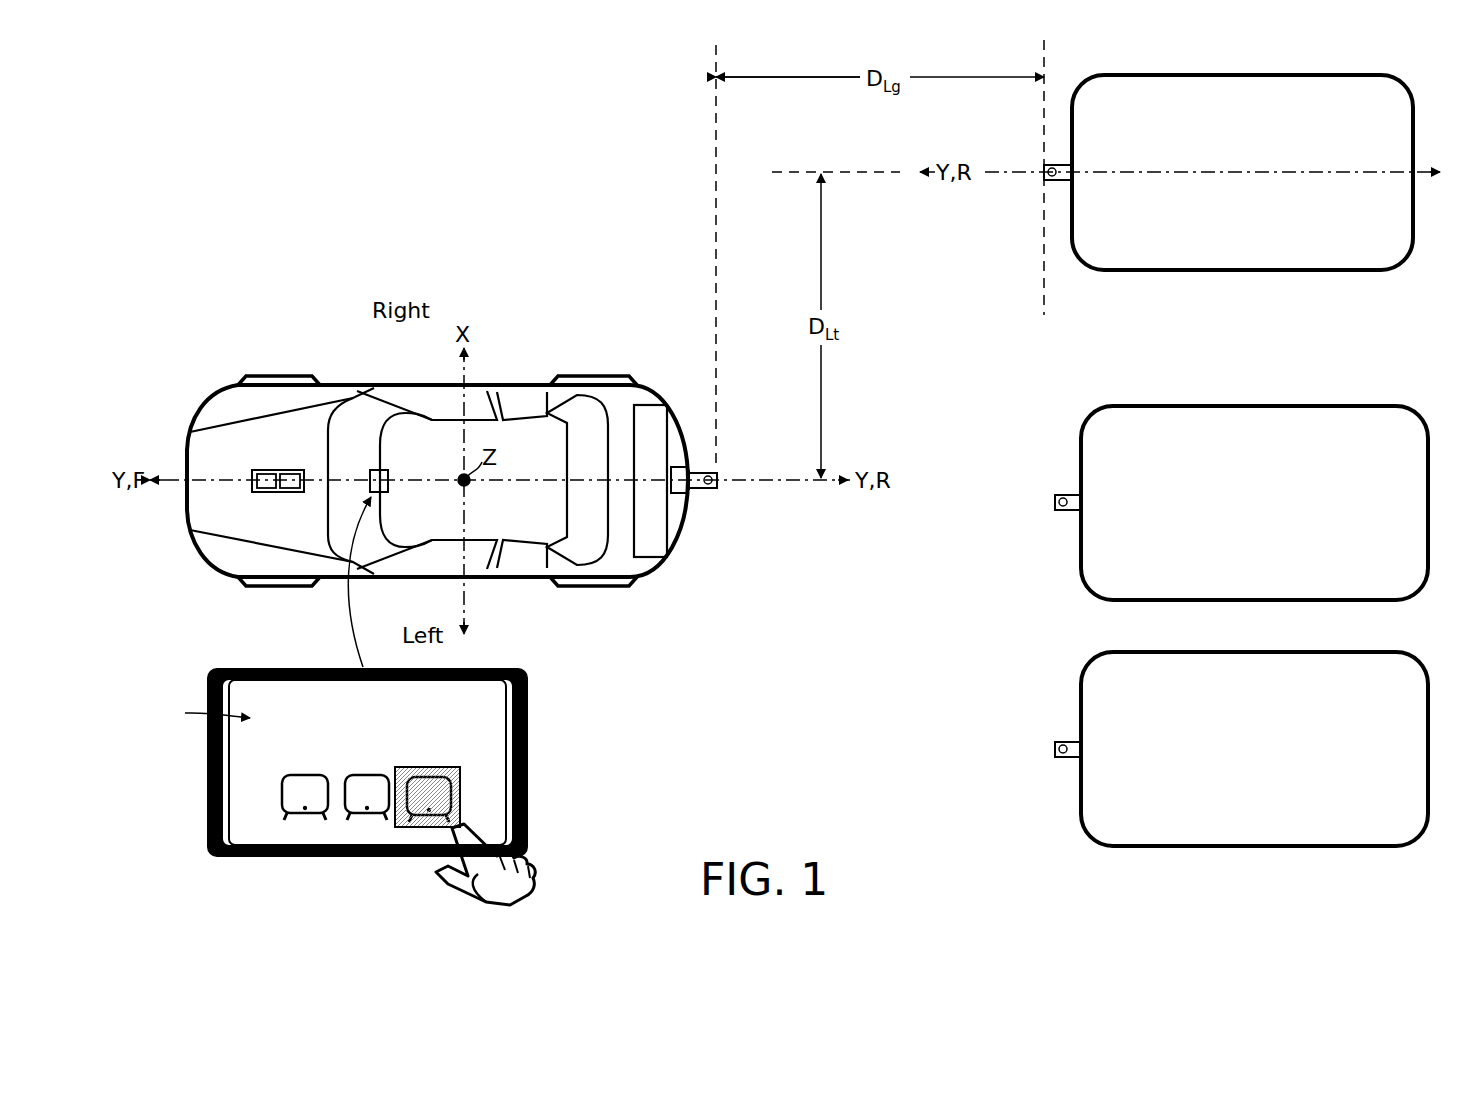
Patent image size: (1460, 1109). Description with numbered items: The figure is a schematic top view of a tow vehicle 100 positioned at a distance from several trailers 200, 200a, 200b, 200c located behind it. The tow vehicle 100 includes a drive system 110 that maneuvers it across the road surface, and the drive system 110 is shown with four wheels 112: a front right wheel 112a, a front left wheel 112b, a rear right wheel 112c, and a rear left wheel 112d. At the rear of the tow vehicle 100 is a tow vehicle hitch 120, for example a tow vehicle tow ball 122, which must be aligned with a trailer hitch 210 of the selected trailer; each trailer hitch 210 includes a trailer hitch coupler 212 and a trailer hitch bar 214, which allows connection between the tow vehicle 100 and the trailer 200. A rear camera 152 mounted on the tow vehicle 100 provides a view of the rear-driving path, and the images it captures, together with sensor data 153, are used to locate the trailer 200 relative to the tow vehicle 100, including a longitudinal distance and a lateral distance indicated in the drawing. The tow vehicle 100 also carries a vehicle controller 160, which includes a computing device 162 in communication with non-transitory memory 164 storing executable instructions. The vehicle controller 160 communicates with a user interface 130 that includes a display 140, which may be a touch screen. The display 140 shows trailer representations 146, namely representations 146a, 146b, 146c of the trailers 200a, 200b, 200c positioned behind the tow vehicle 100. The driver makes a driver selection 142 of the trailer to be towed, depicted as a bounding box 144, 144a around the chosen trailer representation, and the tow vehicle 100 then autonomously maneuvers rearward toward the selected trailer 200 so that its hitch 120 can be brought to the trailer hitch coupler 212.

The tow vehicle 100 is at (217, 378).
The drive system 110 is at (440, 481).
The wheel 112 is at (440, 481).
The front right wheel 112a is at (280, 377).
The front left wheel 112b is at (280, 587).
The rear right wheel 112c is at (592, 377).
The rear left wheel 112d is at (592, 587).
The tow vehicle hitch 120 is at (680, 493).
The tow vehicle tow ball 122 is at (705, 490).
The user interface 130 is at (519, 700).
The display 140 is at (400, 458).
The driver selection 142 is at (455, 772).
The bounding box 144 is at (522, 796).
The bounding box 144a is at (460, 797).
The trailer representation 146 is at (363, 766).
The trailer representation 146a is at (427, 774).
The trailer representation 146b is at (365, 774).
The trailer representation 146c is at (302, 774).
The rear camera 152 is at (688, 495).
The sensor data 153 is at (196, 715).
The vehicle controller 160 is at (278, 470).
The computing device 162 is at (266, 493).
The non-transitory memory 164 is at (290, 493).
The trailer 200 is at (1250, 460).
The trailer 200a is at (1242, 172).
The trailer 200b is at (1254, 503).
The trailer 200c is at (1254, 749).
The trailer hitch 210 is at (975, 258).
The trailer hitch coupler 212 is at (1047, 176).
The trailer hitch bar 214 is at (1050, 180).